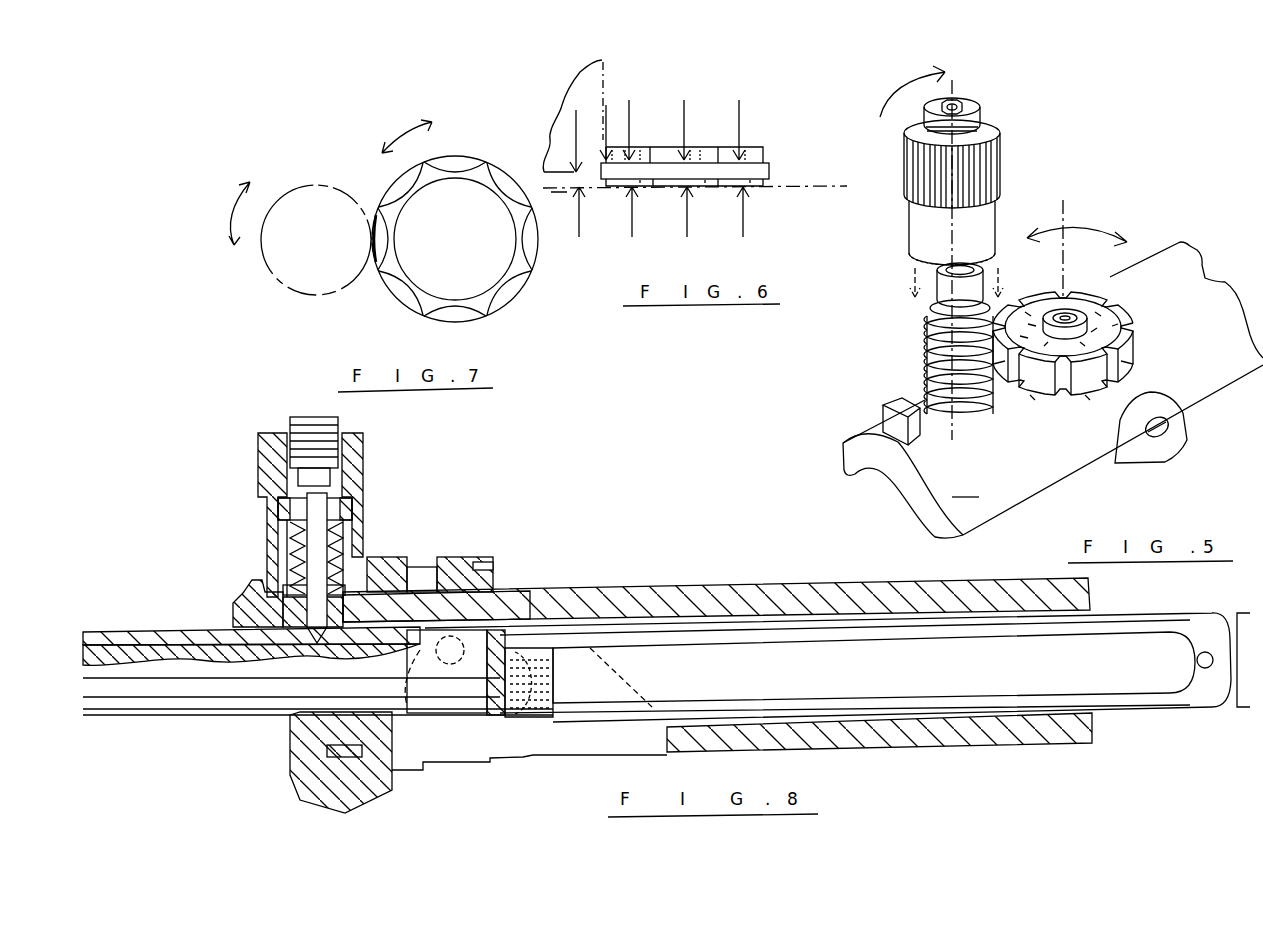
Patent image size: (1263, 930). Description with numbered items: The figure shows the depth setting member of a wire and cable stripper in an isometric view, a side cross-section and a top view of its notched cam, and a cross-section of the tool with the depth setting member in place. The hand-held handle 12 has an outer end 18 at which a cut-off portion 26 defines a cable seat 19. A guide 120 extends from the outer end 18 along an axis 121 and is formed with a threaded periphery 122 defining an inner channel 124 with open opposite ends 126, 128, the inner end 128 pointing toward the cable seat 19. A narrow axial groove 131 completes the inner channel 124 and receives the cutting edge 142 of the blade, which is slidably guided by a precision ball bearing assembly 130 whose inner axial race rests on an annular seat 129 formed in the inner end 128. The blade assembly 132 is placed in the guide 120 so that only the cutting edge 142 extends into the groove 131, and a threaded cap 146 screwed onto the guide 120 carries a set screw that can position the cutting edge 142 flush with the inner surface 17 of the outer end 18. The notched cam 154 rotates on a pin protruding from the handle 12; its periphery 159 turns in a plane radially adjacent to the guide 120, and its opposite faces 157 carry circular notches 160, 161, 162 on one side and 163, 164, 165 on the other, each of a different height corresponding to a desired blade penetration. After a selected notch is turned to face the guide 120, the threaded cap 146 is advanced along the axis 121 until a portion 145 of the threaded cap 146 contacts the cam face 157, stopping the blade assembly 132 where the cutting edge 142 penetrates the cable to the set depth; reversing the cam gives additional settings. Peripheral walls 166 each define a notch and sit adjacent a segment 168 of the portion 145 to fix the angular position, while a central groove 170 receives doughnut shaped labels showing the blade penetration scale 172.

In FIG. 5, the hand-held handle 12 is at (1195, 278).
In FIG. 8, the inner surface 17 is at (582, 620).
In FIG. 5, the outer end 18 is at (1037, 470).
In FIG. 5, the cable seat 19 is at (897, 483).
In FIG. 5, the cut-off portion 26 is at (965, 486).
In FIG. 5, the guide 120 is at (927, 340).
In FIG. 8, the guide 120 is at (288, 542).
In FIG. 5, the axis 121 is at (955, 80).
In FIG. 5, the threaded periphery 122 is at (932, 373).
In FIG. 5, the inner channel 124 is at (930, 310).
In FIG. 8, the inner channel 124 is at (330, 540).
In FIG. 8, the open end 126 is at (350, 495).
In FIG. 8, the inner end 128 is at (365, 590).
In FIG. 8, the annular seat 129 is at (355, 610).
In FIG. 8, the precision ball bearing assembly 130 is at (240, 606).
In FIG. 8, the narrow axial groove 131 is at (330, 645).
In FIG. 8, the blade assembly 132 is at (295, 580).
In FIG. 8, the cutting edge 142 is at (320, 642).
In FIG. 7, the portion of the threaded cap 145 is at (288, 284).
In FIG. 5, the portion of the threaded cap 145 is at (912, 252).
In FIG. 5, the threaded cap 146 is at (1000, 158).
In FIG. 6, the notched cam 154 is at (716, 152).
In FIG. 7, the cam face 157 is at (448, 212).
In FIG. 5, the cam face 157 is at (1120, 300).
In FIG. 5, the periphery 159 is at (1142, 378).
In FIG. 6, the circular notch 160 is at (768, 150).
In FIG. 6, the circular notch 161 is at (700, 150).
In FIG. 6, the circular notch 162 is at (640, 150).
In FIG. 6, the circular notch 163 is at (750, 190).
In FIG. 6, the circular notch 164 is at (705, 190).
In FIG. 6, the circular notch 165 is at (645, 190).
In FIG. 7, the peripheral walls 166 is at (498, 178).
In FIG. 5, the peripheral walls 166 is at (1085, 376).
In FIG. 7, the segment 168 is at (376, 243).
In FIG. 7, the central groove 170 is at (401, 217).
In FIG. 7, the blade penetration scale 172 is at (465, 290).